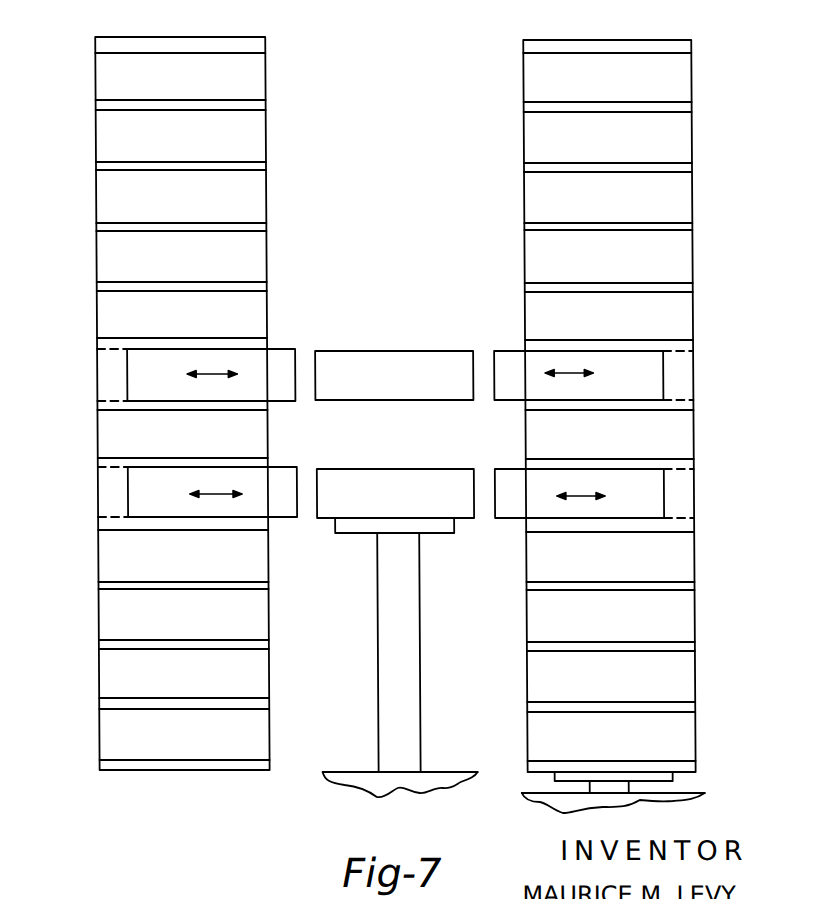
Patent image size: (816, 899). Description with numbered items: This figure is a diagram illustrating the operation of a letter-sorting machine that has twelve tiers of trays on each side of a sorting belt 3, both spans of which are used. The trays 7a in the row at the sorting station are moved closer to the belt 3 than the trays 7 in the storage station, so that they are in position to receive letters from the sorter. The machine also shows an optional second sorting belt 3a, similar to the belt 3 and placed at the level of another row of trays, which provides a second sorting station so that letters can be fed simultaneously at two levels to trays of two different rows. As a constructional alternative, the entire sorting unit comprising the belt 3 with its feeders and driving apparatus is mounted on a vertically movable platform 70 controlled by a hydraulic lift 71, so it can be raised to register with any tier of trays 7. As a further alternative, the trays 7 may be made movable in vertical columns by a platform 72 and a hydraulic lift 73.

The trays 7 is at (255, 140).
The trays 7a is at (284, 391).
The second sorting belt 3a is at (388, 362).
The sorting belt 3 is at (390, 483).
The vertically movable platform 70 is at (355, 528).
The hydraulic lift 71 is at (388, 626).
The platform 72 is at (557, 777).
The hydraulic lift 73 is at (611, 788).